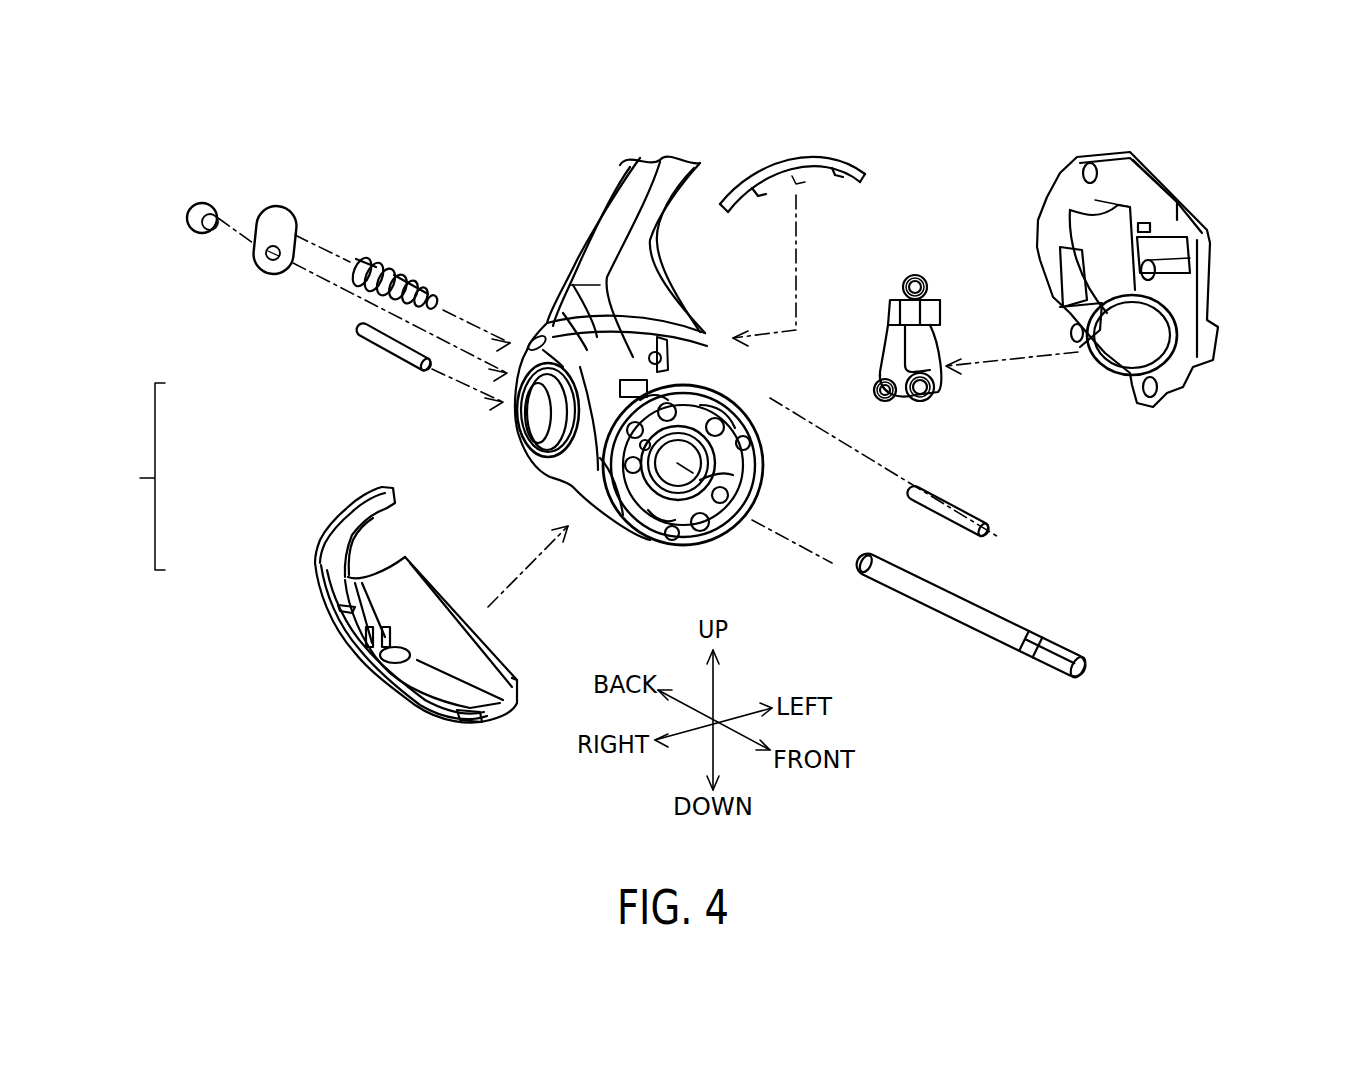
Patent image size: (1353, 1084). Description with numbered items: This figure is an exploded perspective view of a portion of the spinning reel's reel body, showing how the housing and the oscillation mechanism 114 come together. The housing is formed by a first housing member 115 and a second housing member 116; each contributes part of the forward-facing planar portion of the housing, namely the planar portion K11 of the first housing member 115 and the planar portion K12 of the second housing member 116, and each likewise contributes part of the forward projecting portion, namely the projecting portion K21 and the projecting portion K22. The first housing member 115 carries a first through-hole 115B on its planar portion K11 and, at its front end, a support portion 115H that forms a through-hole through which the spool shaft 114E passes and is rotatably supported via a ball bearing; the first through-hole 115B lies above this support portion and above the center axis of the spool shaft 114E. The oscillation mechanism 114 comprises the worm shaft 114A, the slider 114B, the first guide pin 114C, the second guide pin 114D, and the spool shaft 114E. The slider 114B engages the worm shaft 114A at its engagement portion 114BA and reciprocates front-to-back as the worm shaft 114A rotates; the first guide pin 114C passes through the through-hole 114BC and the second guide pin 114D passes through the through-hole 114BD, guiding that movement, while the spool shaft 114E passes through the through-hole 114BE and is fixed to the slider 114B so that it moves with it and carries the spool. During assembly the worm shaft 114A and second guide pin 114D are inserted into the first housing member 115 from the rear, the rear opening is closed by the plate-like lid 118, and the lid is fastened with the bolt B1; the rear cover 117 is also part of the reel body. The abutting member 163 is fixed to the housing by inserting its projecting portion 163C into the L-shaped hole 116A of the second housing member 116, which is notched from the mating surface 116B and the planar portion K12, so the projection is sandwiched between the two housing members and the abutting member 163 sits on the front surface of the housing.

The bolt B1 is at (205, 205).
The plate-like lid 118 is at (282, 215).
The oscillation mechanism 114 is at (158, 476).
The worm shaft 114A is at (405, 265).
The slider 114B is at (910, 250).
The engagement portion 114BA is at (905, 286).
The through-hole 114BC is at (942, 302).
The through-hole 114BD is at (888, 395).
The through-hole 114BE is at (935, 388).
The first guide pin 114C is at (950, 500).
The second guide pin 114D is at (378, 350).
The spool shaft 114E is at (938, 615).
The first housing member 115 is at (600, 247).
The first through-hole 115B is at (668, 340).
The support portion 115H is at (720, 463).
The second housing member 116 is at (1115, 160).
The hole 116A is at (1145, 225).
The mating surface 116B is at (1120, 218).
The rear cover 117 is at (385, 690).
The abutting member 163 is at (815, 165).
The projecting portion 163C is at (802, 178).
The planar portion K11 is at (570, 285).
The planar portion K12 is at (1170, 225).
The projecting portion K21 is at (533, 337).
The projecting portion K22 is at (1170, 250).